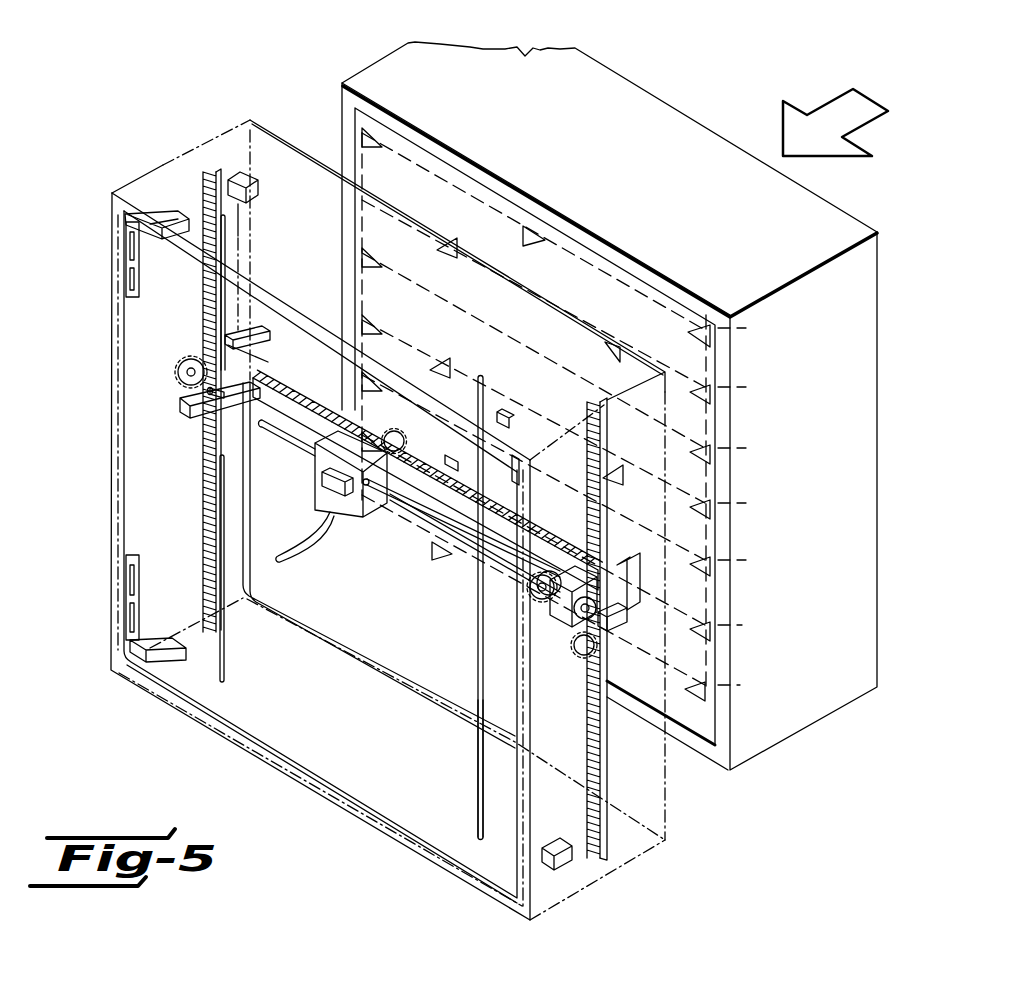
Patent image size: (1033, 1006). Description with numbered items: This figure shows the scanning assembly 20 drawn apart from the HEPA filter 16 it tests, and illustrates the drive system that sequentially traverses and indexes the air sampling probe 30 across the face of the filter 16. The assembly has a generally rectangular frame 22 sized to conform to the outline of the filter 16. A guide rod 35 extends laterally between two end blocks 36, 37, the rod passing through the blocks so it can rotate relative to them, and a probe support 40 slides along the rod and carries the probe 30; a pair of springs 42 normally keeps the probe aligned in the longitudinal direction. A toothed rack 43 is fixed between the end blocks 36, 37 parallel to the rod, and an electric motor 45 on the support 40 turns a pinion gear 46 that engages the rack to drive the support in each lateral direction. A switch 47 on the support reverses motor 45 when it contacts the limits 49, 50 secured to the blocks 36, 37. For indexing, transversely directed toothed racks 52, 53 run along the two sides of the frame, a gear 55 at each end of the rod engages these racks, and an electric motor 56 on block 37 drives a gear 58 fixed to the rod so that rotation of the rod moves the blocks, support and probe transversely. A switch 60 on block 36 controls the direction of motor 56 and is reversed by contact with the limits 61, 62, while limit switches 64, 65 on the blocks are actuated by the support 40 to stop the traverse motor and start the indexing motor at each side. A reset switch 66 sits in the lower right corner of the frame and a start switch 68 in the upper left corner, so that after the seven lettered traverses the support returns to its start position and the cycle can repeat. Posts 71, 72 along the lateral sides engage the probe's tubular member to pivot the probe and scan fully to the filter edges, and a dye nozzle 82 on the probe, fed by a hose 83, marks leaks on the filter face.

The HEPA filter 16 is at (729, 126).
The scanning assembly 20 is at (190, 738).
The frame 22 is at (668, 820).
The air sampling probe 30 is at (490, 380).
The guide rod 35 is at (318, 455).
The end block 36 is at (259, 328).
The end block 37 is at (630, 558).
The probe support 40 is at (396, 520).
The springs 42 is at (336, 524).
The toothed rack 43 is at (320, 395).
The electric motor 45 is at (456, 464).
The pinion gear 46 is at (396, 433).
The switch 47 is at (322, 488).
The limit 49 is at (205, 420).
The limit 50 is at (558, 625).
The toothed rack 52 is at (201, 517).
The toothed rack 53 is at (588, 780).
The gear 55 is at (196, 360).
The electric motor 56 is at (556, 570).
The gear 58 is at (568, 610).
The switch 60 is at (182, 402).
The limit 61 is at (160, 652).
The limit 62 is at (170, 212).
The limit switch 64 is at (178, 373).
The limit switch 65 is at (616, 620).
The reset switch 66 is at (560, 870).
The start switch 68 is at (241, 172).
The post 71 is at (226, 662).
The post 72 is at (477, 783).
The dye nozzle 82 is at (512, 425).
The hose 83 is at (518, 478).